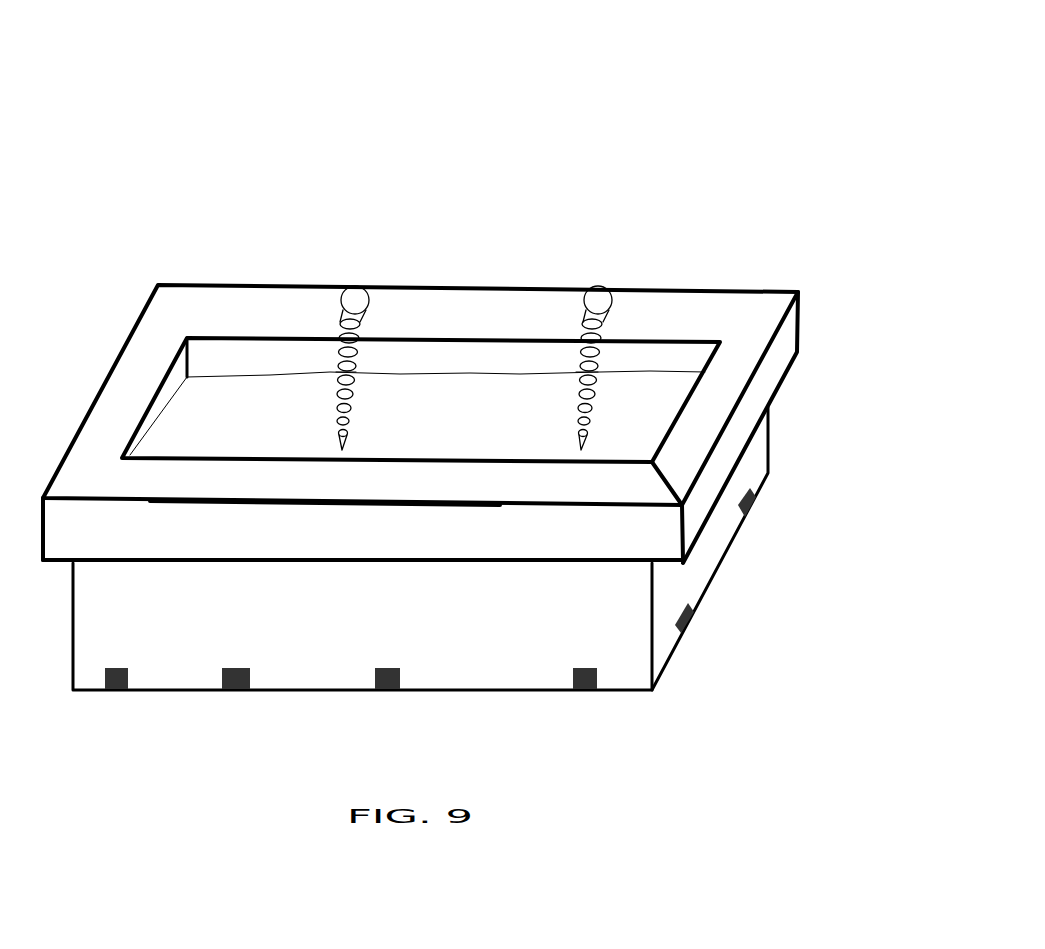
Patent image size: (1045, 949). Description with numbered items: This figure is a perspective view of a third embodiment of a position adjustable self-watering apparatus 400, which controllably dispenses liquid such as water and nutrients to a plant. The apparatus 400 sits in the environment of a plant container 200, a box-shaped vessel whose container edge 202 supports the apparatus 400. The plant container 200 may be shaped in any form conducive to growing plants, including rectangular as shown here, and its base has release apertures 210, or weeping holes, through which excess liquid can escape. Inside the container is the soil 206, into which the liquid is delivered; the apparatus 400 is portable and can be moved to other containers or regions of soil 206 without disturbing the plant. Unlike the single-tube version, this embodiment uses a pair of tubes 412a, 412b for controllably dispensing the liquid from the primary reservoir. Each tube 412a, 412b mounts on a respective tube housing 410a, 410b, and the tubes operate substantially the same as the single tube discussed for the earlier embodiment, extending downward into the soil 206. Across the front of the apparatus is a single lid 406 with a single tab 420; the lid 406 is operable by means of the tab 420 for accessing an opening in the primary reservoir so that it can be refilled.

The position adjustable self-watering apparatus 400 is at (644, 88).
The plant container 200 is at (508, 633).
The container edge 202 is at (145, 333).
The soil 206 is at (667, 370).
The release aperture 210 is at (117, 690).
The lid 406 is at (342, 493).
The tube housing 410a is at (352, 290).
The tube housing 410b is at (596, 290).
The tube 412a is at (340, 385).
The tube 412b is at (577, 377).
The tab 420 is at (308, 488).